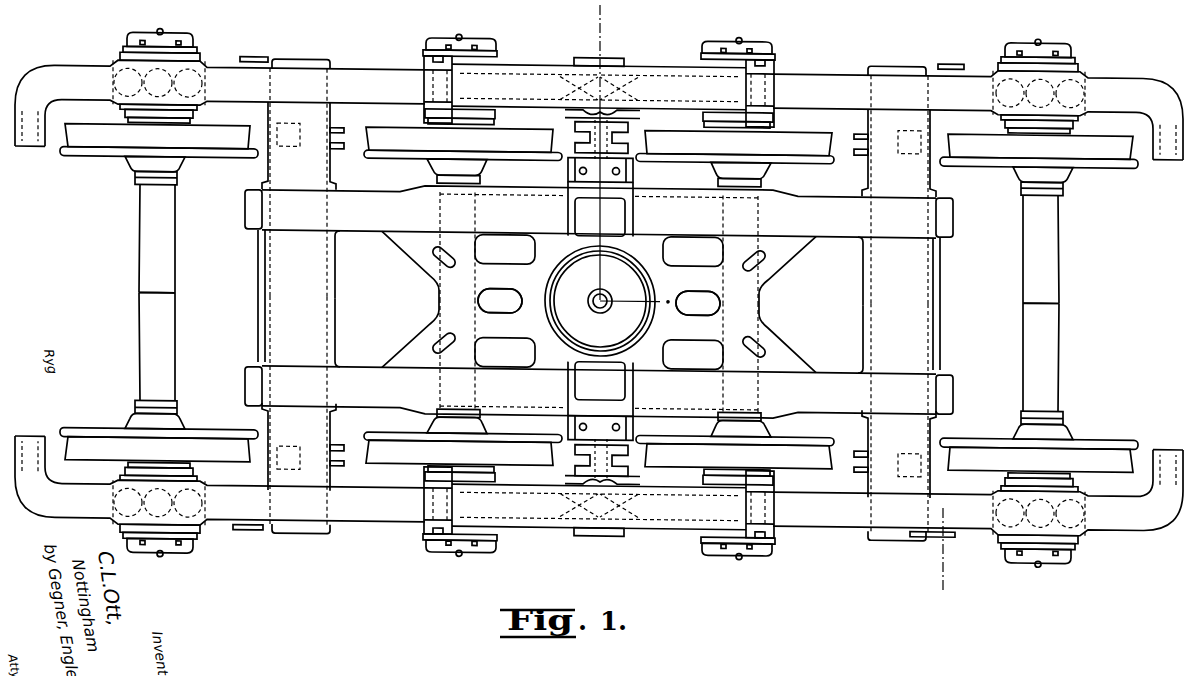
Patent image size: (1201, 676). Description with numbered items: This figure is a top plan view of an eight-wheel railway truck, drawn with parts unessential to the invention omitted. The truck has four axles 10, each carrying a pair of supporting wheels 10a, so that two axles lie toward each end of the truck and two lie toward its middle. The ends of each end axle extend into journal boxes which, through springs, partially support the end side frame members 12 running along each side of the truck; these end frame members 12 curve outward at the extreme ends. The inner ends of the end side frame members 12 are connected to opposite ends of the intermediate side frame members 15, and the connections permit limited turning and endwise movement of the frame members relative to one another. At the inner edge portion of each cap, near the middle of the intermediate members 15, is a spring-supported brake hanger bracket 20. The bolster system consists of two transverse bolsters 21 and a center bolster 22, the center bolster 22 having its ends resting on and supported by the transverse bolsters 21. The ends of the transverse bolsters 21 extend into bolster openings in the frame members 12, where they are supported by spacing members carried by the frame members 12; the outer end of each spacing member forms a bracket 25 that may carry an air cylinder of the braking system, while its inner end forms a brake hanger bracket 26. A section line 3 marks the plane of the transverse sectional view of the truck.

The section line 3- 3 is at (602, 10).
The axle 10 is at (138, 192).
The supporting wheel 10a is at (1118, 433).
The end side frame member 12 is at (378, 83).
The intermediate side frame member 15 is at (663, 83).
The brake hanger bracket 20 is at (628, 157).
The transverse bolster 21 is at (317, 178).
The center bolster 22 is at (790, 357).
The bracket 25 is at (254, 60).
The brake hanger bracket 26 is at (857, 136).